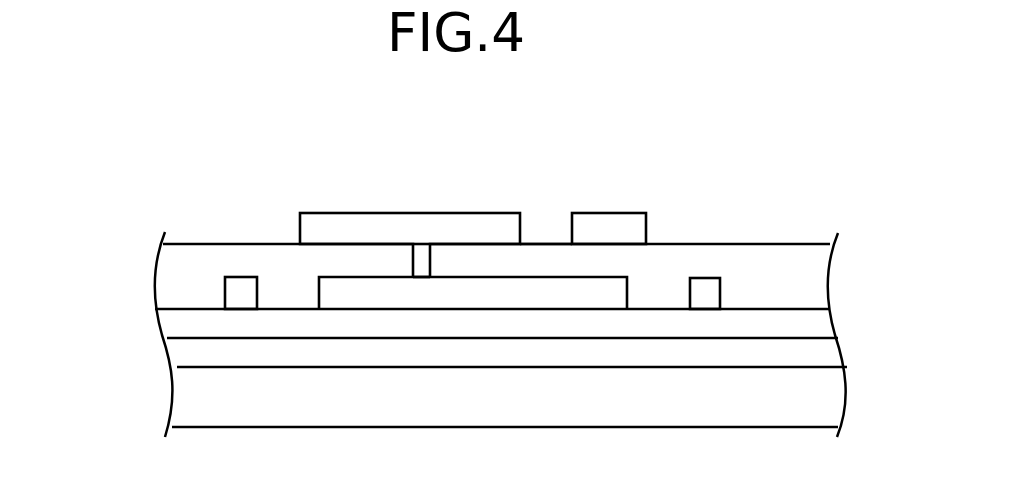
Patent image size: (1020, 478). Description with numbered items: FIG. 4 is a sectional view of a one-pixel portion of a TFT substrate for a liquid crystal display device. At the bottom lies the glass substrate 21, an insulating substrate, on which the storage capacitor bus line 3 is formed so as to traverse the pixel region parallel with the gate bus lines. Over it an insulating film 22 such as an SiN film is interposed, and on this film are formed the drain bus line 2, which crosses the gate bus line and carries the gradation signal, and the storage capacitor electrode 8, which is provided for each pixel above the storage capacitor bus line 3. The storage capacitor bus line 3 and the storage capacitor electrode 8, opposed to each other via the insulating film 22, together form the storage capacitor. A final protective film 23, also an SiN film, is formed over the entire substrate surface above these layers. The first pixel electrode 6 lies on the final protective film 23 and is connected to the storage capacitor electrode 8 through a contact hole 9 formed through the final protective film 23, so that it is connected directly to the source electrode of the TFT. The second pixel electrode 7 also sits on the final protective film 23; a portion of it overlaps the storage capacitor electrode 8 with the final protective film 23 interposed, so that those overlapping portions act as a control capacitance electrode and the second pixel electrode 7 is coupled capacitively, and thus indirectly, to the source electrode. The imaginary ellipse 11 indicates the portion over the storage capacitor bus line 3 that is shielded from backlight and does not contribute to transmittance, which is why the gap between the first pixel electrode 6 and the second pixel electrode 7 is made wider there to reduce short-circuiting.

The glass substrate 21 is at (192, 403).
The storage capacitor bus line 3 is at (192, 357).
The insulating film 22 is at (192, 324).
The drain bus line 2 is at (192, 287).
The storage capacitor electrode 8 is at (333, 292).
The final protective film 23 is at (192, 263).
The contact hole 9 is at (423, 250).
The first pixel electrode 6 is at (337, 222).
The second pixel electrode 7 is at (618, 225).
The imaginary ellipse 11 is at (544, 223).